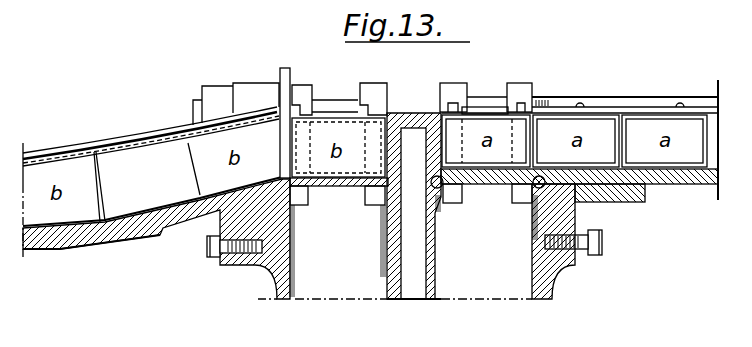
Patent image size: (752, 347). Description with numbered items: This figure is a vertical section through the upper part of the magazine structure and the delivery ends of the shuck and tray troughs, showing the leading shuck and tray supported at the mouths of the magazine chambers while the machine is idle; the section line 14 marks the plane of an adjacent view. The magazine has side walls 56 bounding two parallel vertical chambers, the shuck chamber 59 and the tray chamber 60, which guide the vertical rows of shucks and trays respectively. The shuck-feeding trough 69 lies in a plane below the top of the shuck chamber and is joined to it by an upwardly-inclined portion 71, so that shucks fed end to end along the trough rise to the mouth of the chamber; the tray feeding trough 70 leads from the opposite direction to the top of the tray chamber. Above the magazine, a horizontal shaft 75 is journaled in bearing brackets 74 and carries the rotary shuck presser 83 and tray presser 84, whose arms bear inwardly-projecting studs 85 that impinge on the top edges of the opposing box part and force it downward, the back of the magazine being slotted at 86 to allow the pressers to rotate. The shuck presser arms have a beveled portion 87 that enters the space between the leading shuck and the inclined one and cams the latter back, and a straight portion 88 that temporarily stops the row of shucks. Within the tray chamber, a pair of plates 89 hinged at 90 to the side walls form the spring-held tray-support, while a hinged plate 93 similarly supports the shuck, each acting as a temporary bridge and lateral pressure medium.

The section line 14 is at (486, 12).
The side walls 56 is at (262, 290).
The shuck chamber 59 is at (298, 290).
The tray chamber 60 is at (527, 296).
The shuck-feeding trough 69 is at (127, 129).
The tray feeding trough 70 is at (705, 188).
The upwardly-inclined portion 71 is at (118, 232).
The bearing brackets 74 is at (247, 93).
The horizontal shaft 75 is at (196, 104).
The shuck presser 83 is at (378, 97).
The tray presser 84 is at (526, 102).
The inwardly-projecting studs 85 is at (298, 103).
The slot 86 is at (375, 198).
The beveled portion 87 is at (288, 147).
The straight portion 88 is at (282, 68).
The plates 89 is at (496, 181).
The hinge 90 is at (532, 197).
The plate 93 is at (347, 188).